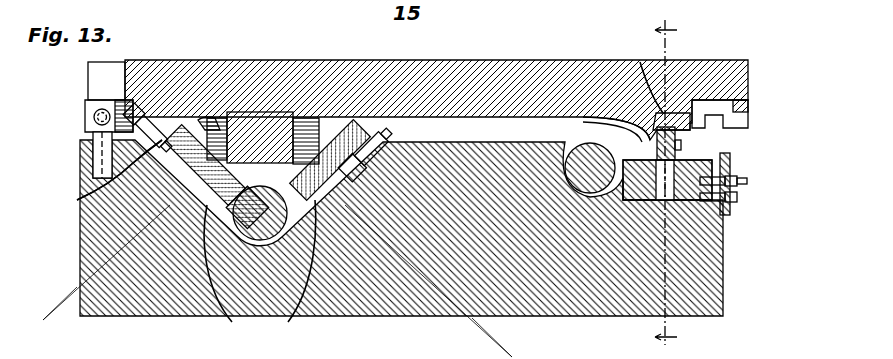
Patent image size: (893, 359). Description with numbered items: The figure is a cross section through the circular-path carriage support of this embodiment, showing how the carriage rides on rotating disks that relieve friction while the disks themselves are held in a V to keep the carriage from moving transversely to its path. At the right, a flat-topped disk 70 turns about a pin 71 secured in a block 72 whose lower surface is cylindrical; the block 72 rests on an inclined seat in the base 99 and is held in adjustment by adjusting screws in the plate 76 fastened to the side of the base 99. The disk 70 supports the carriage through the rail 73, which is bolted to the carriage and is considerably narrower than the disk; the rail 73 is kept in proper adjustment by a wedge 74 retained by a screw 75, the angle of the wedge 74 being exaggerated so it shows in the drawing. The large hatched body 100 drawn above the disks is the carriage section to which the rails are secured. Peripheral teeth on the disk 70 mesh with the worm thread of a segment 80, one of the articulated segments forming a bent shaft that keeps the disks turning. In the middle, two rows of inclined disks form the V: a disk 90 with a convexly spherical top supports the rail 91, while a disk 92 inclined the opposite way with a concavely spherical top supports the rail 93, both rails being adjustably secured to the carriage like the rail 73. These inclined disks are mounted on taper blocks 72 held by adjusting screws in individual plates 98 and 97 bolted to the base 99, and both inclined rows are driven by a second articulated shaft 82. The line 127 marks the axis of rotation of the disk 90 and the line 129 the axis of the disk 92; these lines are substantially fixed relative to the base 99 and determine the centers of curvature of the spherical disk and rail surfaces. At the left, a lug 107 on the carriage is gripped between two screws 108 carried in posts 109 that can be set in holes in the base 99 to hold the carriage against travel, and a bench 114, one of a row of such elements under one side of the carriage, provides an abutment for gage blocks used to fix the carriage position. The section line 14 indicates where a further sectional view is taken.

The section line 14- 14 is at (669, 179).
The disks 70 is at (636, 148).
The pins 71 is at (670, 202).
The blocks 72 is at (302, 312).
The rail 73 is at (676, 158).
The wedges 74 is at (663, 113).
The screws 75 is at (688, 112).
The plate 76 is at (730, 170).
The segments 80 is at (580, 150).
The second articulated shaft 82 is at (260, 200).
The disks 90 is at (330, 130).
The rail 91 is at (298, 120).
The disks 92 is at (200, 120).
The rail 93 is at (240, 116).
The plate 97 is at (80, 200).
The plate 98 is at (380, 142).
The base 99 is at (403, 305).
The slide bar 100 is at (540, 70).
The lug 107 is at (100, 72).
The screws 108 is at (96, 115).
The posts 109 is at (92, 125).
The benches 114 is at (735, 120).
The line 127 is at (512, 357).
The line 129 is at (57, 306).